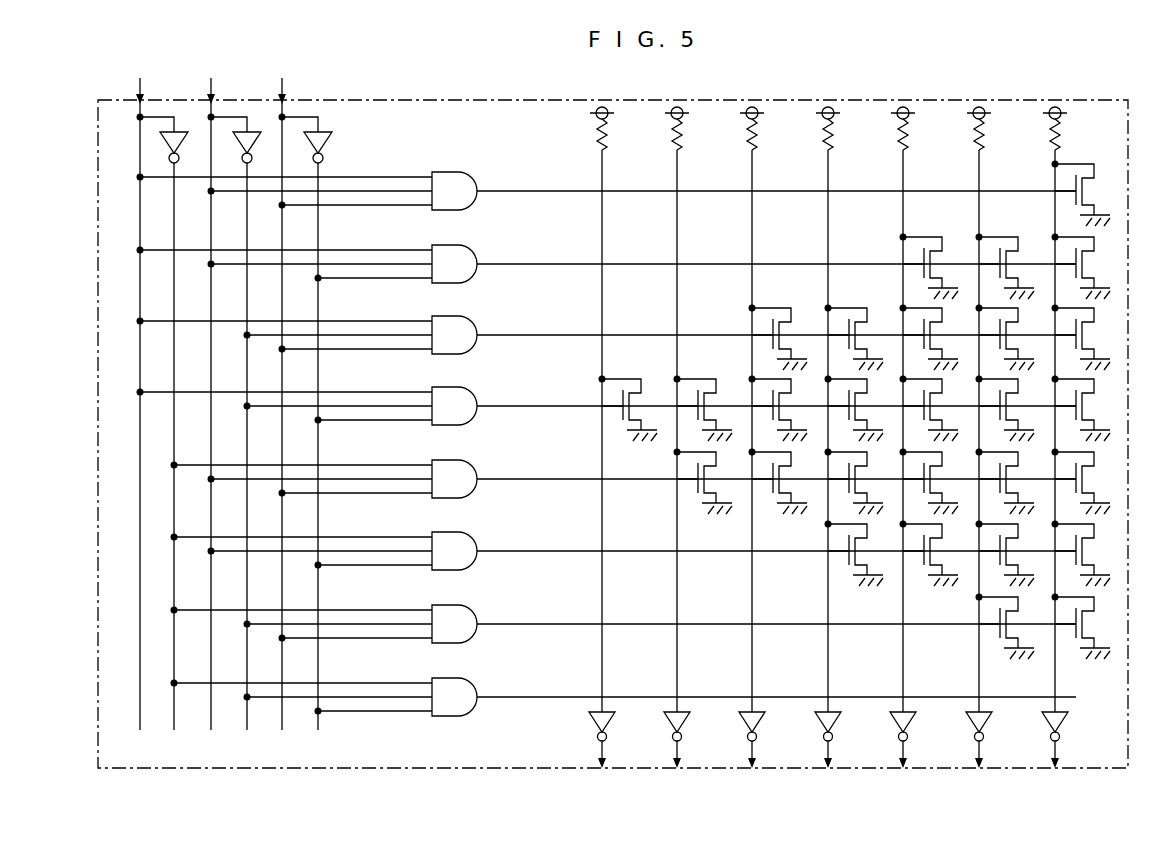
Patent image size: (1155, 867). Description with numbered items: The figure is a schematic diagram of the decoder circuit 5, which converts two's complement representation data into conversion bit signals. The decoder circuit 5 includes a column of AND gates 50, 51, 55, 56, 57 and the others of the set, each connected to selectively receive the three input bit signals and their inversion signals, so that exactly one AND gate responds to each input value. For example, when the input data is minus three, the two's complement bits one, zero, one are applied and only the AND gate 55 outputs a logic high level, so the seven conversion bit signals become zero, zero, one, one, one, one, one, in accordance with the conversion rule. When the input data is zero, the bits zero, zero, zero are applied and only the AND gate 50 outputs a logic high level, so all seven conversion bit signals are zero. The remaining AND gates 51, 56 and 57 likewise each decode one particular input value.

The decoder circuit 5 is at (993, 100).
The AND gate 50 is at (467, 680).
The AND gate 51 is at (467, 607).
The AND gate 55 is at (463, 318).
The AND gate 56 is at (465, 244).
The AND gate 57 is at (461, 171).